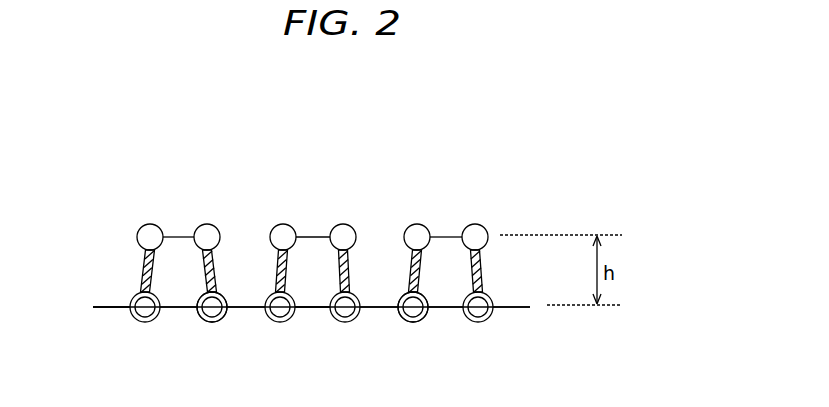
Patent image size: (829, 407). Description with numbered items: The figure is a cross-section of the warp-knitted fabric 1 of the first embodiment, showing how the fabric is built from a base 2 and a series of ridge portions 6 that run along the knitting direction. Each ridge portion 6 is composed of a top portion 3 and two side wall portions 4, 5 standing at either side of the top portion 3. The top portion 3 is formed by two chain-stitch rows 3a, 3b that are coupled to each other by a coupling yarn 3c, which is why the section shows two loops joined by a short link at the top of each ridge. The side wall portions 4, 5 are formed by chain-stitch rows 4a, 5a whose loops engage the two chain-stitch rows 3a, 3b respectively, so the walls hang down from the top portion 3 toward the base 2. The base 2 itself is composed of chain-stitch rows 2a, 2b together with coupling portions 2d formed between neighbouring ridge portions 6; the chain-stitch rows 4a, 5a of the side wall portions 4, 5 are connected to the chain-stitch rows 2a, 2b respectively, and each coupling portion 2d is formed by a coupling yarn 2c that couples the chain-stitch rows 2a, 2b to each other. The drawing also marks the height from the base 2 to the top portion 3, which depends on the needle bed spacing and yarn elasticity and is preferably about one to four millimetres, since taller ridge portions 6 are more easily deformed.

The warp-knitted fabric 1 is at (66, 115).
The base 2 is at (509, 310).
The chain-stitch row 2a is at (410, 322).
The chain-stitch row 2b is at (210, 322).
The coupling yarn 2c is at (113, 309).
The coupling portion 2d is at (378, 293).
The top portion 3 is at (180, 198).
The chain-stitch row 3a is at (152, 224).
The chain-stitch row 3b is at (212, 224).
The coupling yarn 3c is at (445, 234).
The side wall portion 4 is at (141, 291).
The chain-stitch row 4a is at (422, 322).
The side wall portion 5 is at (219, 291).
The chain-stitch row 5a is at (220, 322).
The ridge portion 6 is at (312, 229).